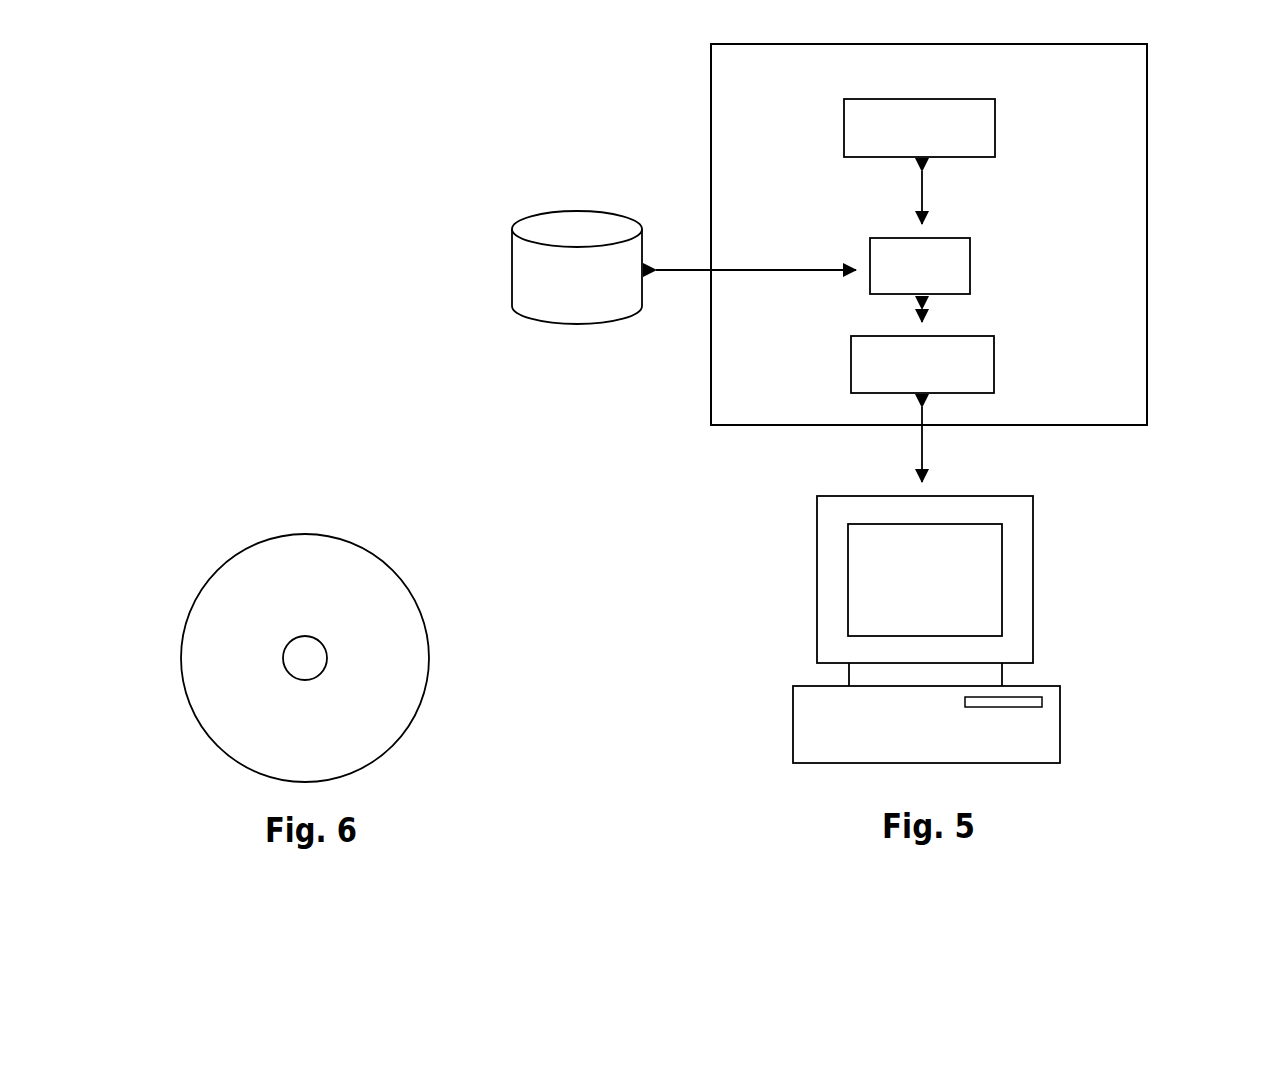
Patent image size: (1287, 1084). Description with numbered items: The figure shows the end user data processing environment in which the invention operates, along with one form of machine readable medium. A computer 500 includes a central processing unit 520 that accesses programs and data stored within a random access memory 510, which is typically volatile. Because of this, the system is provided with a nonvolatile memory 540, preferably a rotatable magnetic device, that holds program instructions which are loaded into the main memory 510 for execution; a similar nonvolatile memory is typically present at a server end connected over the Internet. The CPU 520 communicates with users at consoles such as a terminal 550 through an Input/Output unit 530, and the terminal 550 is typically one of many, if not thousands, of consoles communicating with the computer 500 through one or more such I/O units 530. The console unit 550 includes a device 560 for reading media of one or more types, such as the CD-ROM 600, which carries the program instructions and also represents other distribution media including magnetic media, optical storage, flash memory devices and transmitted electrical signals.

In FIG. 5, the computer 500 is at (1148, 172).
In FIG. 5, the random access memory 510 is at (995, 128).
In FIG. 5, the central processing unit 520 is at (972, 265).
In FIG. 5, the Input/Output unit 530 is at (995, 364).
In FIG. 5, the nonvolatile memory 540 is at (593, 210).
In FIG. 5, the terminal 550 is at (793, 727).
In FIG. 5, the media reading device 560 is at (1043, 702).
In FIG. 6, the CD-ROM 600 is at (422, 614).